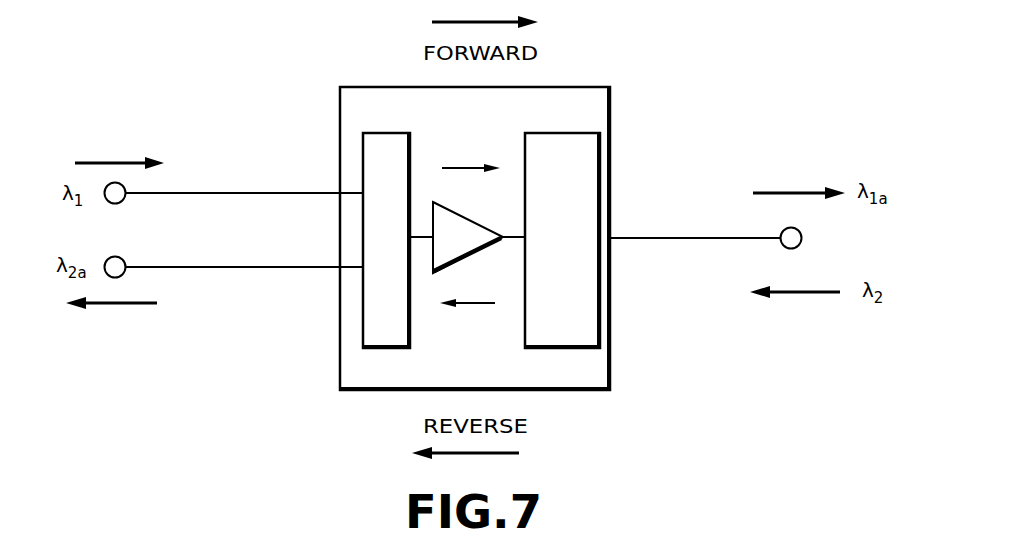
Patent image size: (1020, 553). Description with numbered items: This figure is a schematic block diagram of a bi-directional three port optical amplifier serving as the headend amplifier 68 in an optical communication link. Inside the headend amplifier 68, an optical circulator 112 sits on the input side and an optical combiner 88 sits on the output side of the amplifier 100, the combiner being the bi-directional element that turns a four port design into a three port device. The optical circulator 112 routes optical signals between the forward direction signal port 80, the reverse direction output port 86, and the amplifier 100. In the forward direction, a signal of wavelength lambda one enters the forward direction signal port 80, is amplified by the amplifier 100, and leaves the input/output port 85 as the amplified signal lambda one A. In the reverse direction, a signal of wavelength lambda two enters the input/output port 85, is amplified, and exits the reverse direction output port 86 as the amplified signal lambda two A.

The headend amplifier 68 is at (565, 86).
The optical circulator 112 is at (383, 132).
The optical combiner 88 is at (548, 132).
The amplifier 100 is at (462, 216).
The forward direction signal port 80 is at (222, 191).
The reverse direction output port 86 is at (223, 265).
The input/output port 85 is at (670, 237).